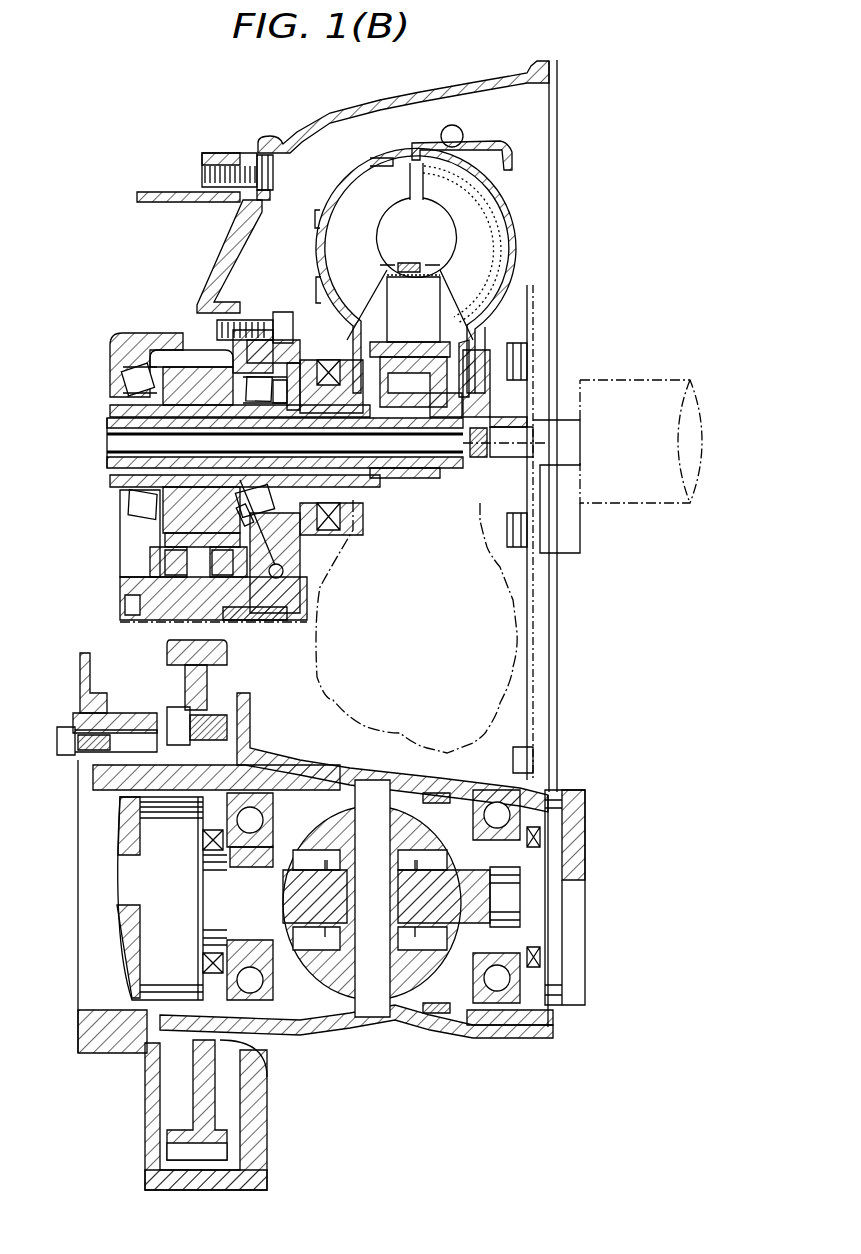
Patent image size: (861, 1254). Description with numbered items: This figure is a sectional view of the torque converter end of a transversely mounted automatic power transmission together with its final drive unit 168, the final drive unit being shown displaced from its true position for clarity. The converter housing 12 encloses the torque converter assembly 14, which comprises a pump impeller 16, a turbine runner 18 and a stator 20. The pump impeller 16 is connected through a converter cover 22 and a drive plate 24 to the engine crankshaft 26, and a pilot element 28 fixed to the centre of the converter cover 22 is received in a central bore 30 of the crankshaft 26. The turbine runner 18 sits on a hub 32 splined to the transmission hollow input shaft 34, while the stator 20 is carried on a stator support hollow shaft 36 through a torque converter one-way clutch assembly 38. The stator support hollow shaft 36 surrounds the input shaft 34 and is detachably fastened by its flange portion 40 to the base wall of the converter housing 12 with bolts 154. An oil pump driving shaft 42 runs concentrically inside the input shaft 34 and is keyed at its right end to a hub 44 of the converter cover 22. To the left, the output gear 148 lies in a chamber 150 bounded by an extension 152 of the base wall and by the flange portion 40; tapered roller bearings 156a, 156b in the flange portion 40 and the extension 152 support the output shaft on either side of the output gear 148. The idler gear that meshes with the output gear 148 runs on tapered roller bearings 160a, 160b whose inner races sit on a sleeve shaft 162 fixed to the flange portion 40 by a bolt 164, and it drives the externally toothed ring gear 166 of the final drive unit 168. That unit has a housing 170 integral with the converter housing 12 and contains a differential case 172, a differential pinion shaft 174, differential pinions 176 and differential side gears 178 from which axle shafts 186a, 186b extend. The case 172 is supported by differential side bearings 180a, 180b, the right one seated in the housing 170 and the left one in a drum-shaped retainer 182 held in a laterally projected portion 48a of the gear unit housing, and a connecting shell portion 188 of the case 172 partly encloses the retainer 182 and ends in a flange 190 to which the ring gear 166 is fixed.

The converter housing 12 is at (372, 102).
The torque converter assembly 14 is at (487, 138).
The pump impeller 16 is at (351, 188).
The turbine runner 18 is at (497, 207).
The stator 20 is at (430, 295).
The converter cover 22 is at (505, 200).
The drive plate 24 is at (535, 296).
The crankshaft 26 is at (643, 397).
The pilot element 28 is at (523, 420).
The central bore 30 is at (580, 465).
The hub 32 is at (465, 455).
The transmission hollow input shaft 34 is at (425, 462).
The stator support hollow shaft 36 is at (427, 478).
The torque converter one-way clutch assembly 38 is at (403, 375).
The flange portion 40 is at (259, 308).
The oil pump driving shaft 42 is at (393, 472).
The hub 44 is at (490, 417).
The laterally projected portion 48a is at (160, 1175).
The output gear 148 is at (150, 343).
The chamber 150 is at (200, 352).
The extension 152 is at (140, 340).
The bolts 154 is at (285, 310).
The tapered roller bearing 156a is at (253, 383).
The tapered roller bearing 156b is at (122, 380).
The tapered roller bearing 160a is at (170, 567).
The tapered roller bearing 160b is at (137, 588).
The sleeve shaft 162 is at (323, 584).
The bolt 164 is at (272, 620).
The externally toothed ring gear 166 is at (167, 649).
The final drive unit 168 is at (350, 1057).
The housing 170 is at (434, 1028).
The differential case 172 is at (337, 1000).
The differential pinion shaft 174 is at (377, 985).
The differential pinions 176 is at (375, 977).
The differential side gears 178 is at (457, 848).
The differential side bearing 180a is at (505, 1010).
The differential side bearing 180b is at (205, 823).
The drum-shaped retainer 182 is at (163, 1020).
The axle shaft 186a is at (567, 917).
The axle shaft 186b is at (130, 860).
The connecting shell portion 188 is at (262, 762).
The flange 190 is at (247, 1123).